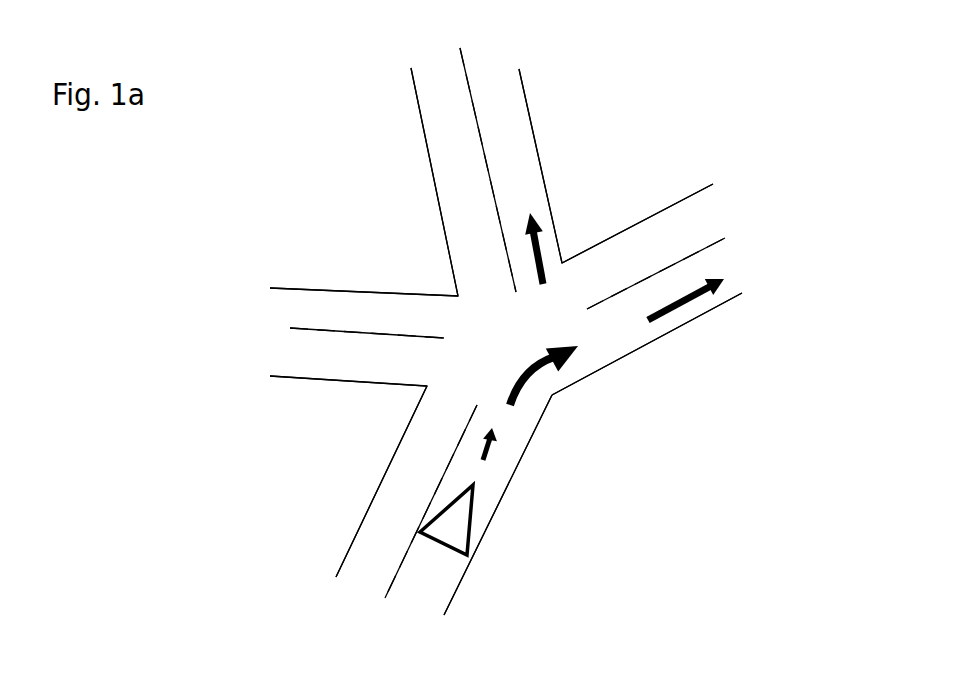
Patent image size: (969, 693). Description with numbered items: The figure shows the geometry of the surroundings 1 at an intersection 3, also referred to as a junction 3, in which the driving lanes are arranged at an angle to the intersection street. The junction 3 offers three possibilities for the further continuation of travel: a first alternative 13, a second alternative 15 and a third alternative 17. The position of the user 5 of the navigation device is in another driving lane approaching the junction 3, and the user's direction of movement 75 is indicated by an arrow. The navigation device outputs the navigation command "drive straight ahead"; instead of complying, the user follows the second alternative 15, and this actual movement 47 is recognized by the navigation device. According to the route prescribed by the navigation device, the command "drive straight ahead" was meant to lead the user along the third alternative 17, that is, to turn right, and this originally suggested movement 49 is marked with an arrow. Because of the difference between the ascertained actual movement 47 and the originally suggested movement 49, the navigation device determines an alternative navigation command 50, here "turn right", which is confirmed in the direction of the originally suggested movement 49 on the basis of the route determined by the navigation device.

The geometry of the surroundings 1 is at (324, 178).
The junction/intersection 3 is at (624, 265).
The position of the user 5 is at (469, 523).
The first alternative 13 is at (305, 397).
The second alternative 15 is at (519, 161).
The third alternative 17 is at (647, 428).
The actual movement 47 is at (521, 237).
The originally suggested movement 49 is at (692, 314).
The alternative navigation command 50 is at (518, 356).
The direction of movement 75 is at (504, 461).